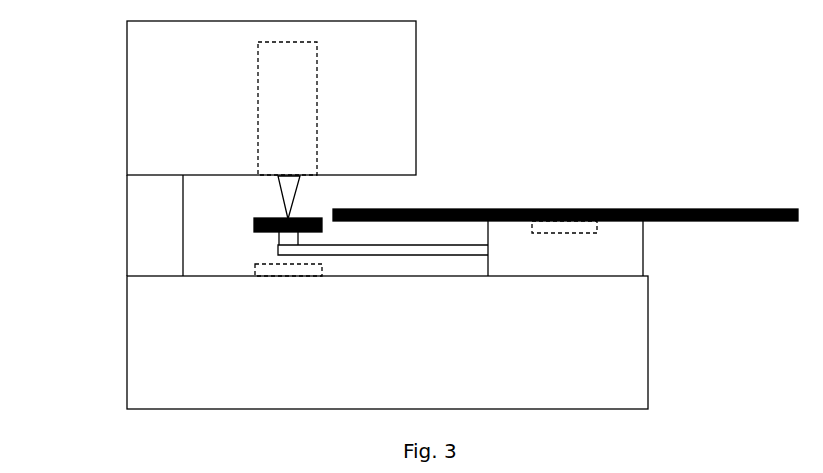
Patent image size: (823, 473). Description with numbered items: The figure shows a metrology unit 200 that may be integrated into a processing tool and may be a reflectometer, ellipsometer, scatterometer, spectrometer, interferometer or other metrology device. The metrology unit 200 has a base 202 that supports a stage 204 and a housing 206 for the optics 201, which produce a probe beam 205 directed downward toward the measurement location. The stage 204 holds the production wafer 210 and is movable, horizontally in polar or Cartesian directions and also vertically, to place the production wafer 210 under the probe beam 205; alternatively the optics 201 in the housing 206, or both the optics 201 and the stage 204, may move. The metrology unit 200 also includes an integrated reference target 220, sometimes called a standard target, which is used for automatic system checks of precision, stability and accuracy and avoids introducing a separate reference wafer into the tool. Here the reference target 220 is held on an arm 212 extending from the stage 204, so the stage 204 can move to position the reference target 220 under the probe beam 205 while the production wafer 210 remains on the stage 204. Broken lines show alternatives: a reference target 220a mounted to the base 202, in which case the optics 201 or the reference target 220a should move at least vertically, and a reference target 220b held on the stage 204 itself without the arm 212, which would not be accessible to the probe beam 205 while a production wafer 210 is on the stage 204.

The metrology unit 200 is at (469, 76).
The optics 201 is at (317, 86).
The base 202 is at (648, 377).
The stage 204 is at (643, 250).
The probe beam 205 is at (277, 196).
The housing 206 is at (127, 100).
The production wafer 210 is at (655, 209).
The arm 212 is at (385, 256).
The reference target 220 is at (254, 230).
The reference target 220a is at (256, 276).
The reference target 220b is at (575, 233).